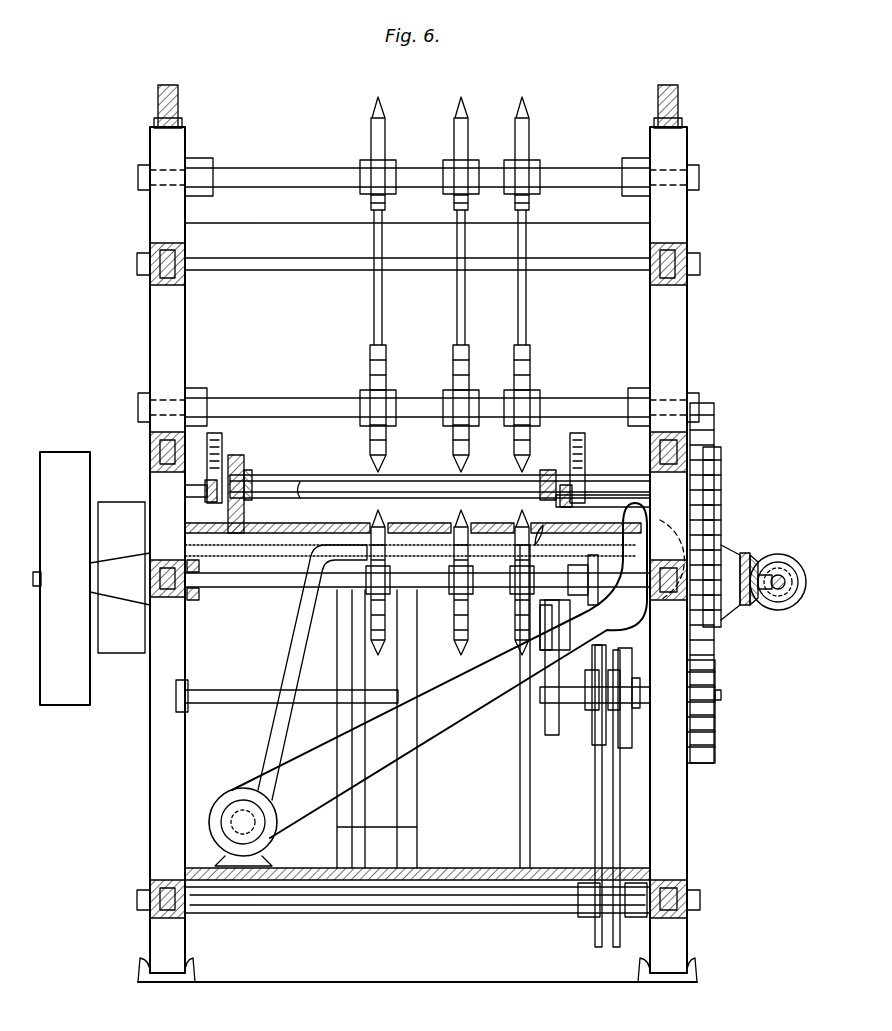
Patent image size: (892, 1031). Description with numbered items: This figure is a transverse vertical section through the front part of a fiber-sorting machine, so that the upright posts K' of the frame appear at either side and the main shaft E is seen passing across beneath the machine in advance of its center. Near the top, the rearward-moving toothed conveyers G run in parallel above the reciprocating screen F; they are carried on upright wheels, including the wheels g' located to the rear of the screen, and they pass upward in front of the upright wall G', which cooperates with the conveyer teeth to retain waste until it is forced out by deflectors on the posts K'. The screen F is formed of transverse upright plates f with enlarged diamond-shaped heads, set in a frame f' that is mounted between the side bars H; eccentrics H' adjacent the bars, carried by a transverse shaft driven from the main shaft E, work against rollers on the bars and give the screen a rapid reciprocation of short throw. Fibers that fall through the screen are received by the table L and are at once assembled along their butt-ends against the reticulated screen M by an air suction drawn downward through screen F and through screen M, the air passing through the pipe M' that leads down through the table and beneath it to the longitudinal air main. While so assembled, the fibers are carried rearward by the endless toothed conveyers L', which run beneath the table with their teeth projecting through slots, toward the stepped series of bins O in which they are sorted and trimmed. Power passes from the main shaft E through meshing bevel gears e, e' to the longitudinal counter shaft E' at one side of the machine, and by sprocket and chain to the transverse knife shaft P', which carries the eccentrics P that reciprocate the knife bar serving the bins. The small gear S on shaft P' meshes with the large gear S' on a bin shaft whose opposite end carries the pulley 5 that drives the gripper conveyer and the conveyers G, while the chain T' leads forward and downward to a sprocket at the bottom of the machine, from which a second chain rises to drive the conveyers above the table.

The upright posts K' is at (434, 533).
The upright wall G' is at (432, 284).
The toothed conveyers G is at (432, 284).
The wheels g' is at (484, 369).
The eccentrics H' is at (412, 459).
The bars H is at (397, 463).
The frame f' is at (261, 487).
The reciprocating screen F is at (440, 475).
The transverse upright plates f is at (305, 499).
The reticulated screen M is at (514, 493).
The bevel gear e is at (760, 565).
The bevel gear e' is at (783, 565).
The longitudinal counter shaft E' is at (778, 620).
The table L is at (413, 544).
The endless toothed conveyers L' is at (450, 579).
The pulley 5 is at (110, 512).
The main shaft E is at (417, 603).
The transverse shaft P' is at (287, 683).
The pipe M' is at (458, 670).
The eccentrics P is at (595, 678).
The bins O is at (455, 815).
The small gear S is at (721, 711).
The large gear S' is at (733, 719).
The chain T' is at (628, 798).